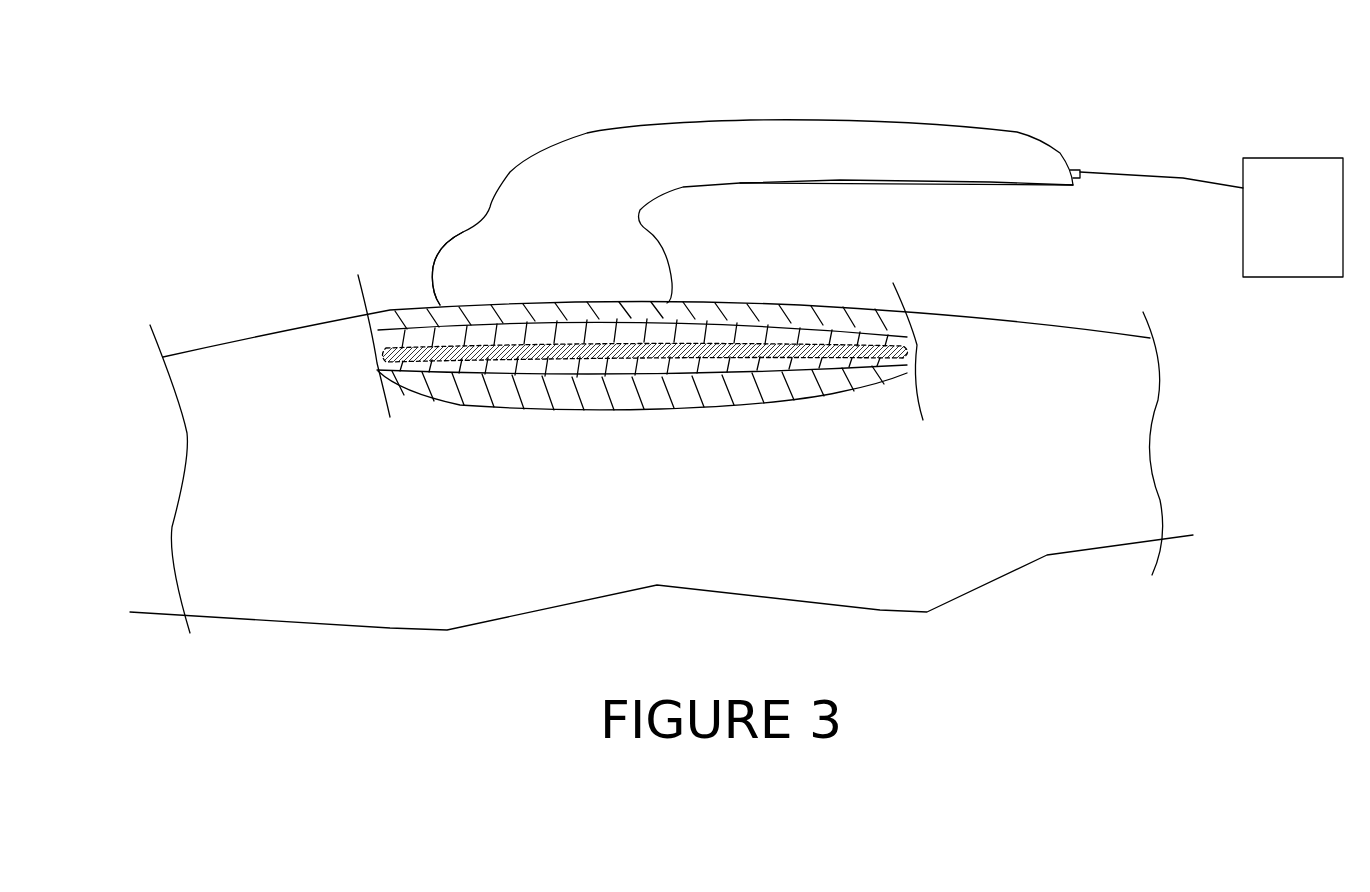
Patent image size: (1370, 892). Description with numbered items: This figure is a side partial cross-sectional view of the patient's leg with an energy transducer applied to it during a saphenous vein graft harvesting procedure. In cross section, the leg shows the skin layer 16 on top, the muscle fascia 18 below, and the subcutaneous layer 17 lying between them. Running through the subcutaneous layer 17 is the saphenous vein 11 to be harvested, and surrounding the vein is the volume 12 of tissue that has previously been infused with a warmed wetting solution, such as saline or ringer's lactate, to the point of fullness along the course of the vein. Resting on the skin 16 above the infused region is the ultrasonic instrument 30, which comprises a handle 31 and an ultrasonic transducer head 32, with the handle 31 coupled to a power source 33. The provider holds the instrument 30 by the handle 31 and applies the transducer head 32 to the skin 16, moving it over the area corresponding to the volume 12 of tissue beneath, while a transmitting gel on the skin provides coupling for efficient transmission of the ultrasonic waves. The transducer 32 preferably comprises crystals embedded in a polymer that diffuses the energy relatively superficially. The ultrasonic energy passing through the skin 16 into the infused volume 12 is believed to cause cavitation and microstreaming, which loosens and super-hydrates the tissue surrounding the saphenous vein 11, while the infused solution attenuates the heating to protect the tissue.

The saphenous vein 11 is at (742, 380).
The volume of tissue 12 is at (567, 380).
The skin layer 16 is at (397, 320).
The subcutaneous layer 17 is at (210, 473).
The muscle fascia 18 is at (482, 397).
The ultrasonic instrument 30 is at (833, 137).
The handle 31 is at (735, 185).
The ultrasonic transducer head 32 is at (460, 230).
The power source 33 is at (1303, 277).